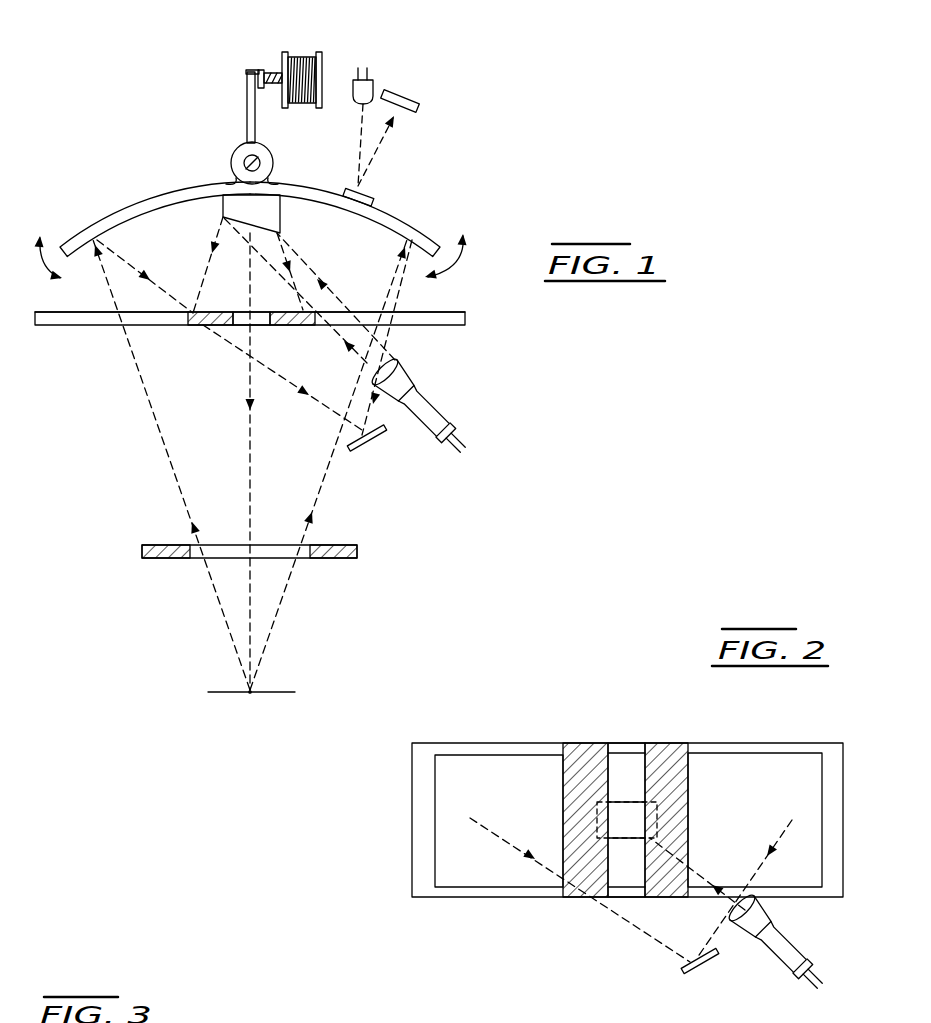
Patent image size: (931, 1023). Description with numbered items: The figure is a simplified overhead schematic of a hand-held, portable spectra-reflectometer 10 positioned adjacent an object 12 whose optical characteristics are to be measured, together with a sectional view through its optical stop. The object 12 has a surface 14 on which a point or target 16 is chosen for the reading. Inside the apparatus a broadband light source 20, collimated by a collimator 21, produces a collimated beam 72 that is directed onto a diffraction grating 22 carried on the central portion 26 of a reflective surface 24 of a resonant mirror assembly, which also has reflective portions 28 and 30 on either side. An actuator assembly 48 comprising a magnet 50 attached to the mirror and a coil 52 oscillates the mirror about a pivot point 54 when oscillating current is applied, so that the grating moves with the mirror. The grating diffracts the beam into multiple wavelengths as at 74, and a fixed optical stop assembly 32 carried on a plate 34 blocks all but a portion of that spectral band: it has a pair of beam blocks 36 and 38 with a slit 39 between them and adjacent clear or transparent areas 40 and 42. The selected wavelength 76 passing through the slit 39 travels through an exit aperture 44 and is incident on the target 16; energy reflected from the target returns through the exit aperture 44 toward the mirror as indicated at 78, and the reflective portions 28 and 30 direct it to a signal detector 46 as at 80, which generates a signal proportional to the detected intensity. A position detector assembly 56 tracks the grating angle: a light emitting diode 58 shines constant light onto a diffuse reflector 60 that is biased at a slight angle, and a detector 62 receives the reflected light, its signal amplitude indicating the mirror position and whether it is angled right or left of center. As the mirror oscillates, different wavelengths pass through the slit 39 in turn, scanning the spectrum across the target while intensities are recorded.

In FIG. 1, the spectra-reflectometer 10 is at (90, 108).
In FIG. 1, the object 12 is at (164, 724).
In FIG. 1, the surface 14 is at (283, 691).
In FIG. 1, the target 16 is at (251, 694).
In FIG. 1, the light source 20 is at (433, 403).
In FIG. 2, the light source 20 is at (799, 945).
In FIG. 1, the collimator 21 is at (404, 364).
In FIG. 2, the collimator 21 is at (745, 926).
In FIG. 1, the diffraction grating 22 is at (281, 210).
In FIG. 2, the diffraction grating 22 is at (622, 801).
In FIG. 1, the reflective surface 24 is at (251, 219).
In FIG. 2, the reflective surface 24 is at (627, 798).
In FIG. 1, the central portion 26 is at (216, 155).
In FIG. 1, the reflective portion 28 is at (147, 212).
In FIG. 2, the reflective portion 28 is at (483, 797).
In FIG. 1, the reflective portion 30 is at (382, 217).
In FIG. 2, the reflective portion 30 is at (748, 797).
In FIG. 1, the optical stop assembly 32 is at (268, 329).
In FIG. 1, the slide plate 34 is at (268, 323).
In FIG. 1, the beam block 36 is at (200, 326).
In FIG. 2, the beam block 36 is at (580, 742).
In FIG. 1, the beam block 38 is at (288, 326).
In FIG. 2, the beam block 38 is at (672, 742).
In FIG. 1, the slit 39 is at (261, 333).
In FIG. 2, the slit 39 is at (634, 732).
In FIG. 1, the transparent area 40 is at (158, 310).
In FIG. 1, the transparent area 42 is at (378, 303).
In FIG. 1, the exit aperture 44 is at (265, 535).
In FIG. 1, the signal detector 46 is at (370, 441).
In FIG. 2, the signal detector 46 is at (684, 976).
In FIG. 1, the actuator assembly 48 is at (262, 77).
In FIG. 1, the magnet 50 is at (271, 69).
In FIG. 1, the coil 52 is at (305, 52).
In FIG. 1, the pivot point 54 is at (247, 77).
In FIG. 1, the position detector assembly 56 is at (425, 126).
In FIG. 1, the light emitting diode 58 is at (373, 80).
In FIG. 1, the diffuse reflector 60 is at (376, 198).
In FIG. 1, the detector 62 is at (420, 107).
In FIG. 1, the collimated beam 72 is at (360, 358).
In FIG. 2, the collimated beam 72 is at (706, 861).
In FIG. 1, the diffracted wavelengths 74 is at (208, 269).
In FIG. 1, the selected wavelength 76 is at (250, 456).
In FIG. 1, the reflected energy 78 is at (155, 422).
In FIG. 1, the reflected energy to detector 80 is at (282, 385).
In FIG. 2, the reflected energy to detector 80 is at (633, 926).